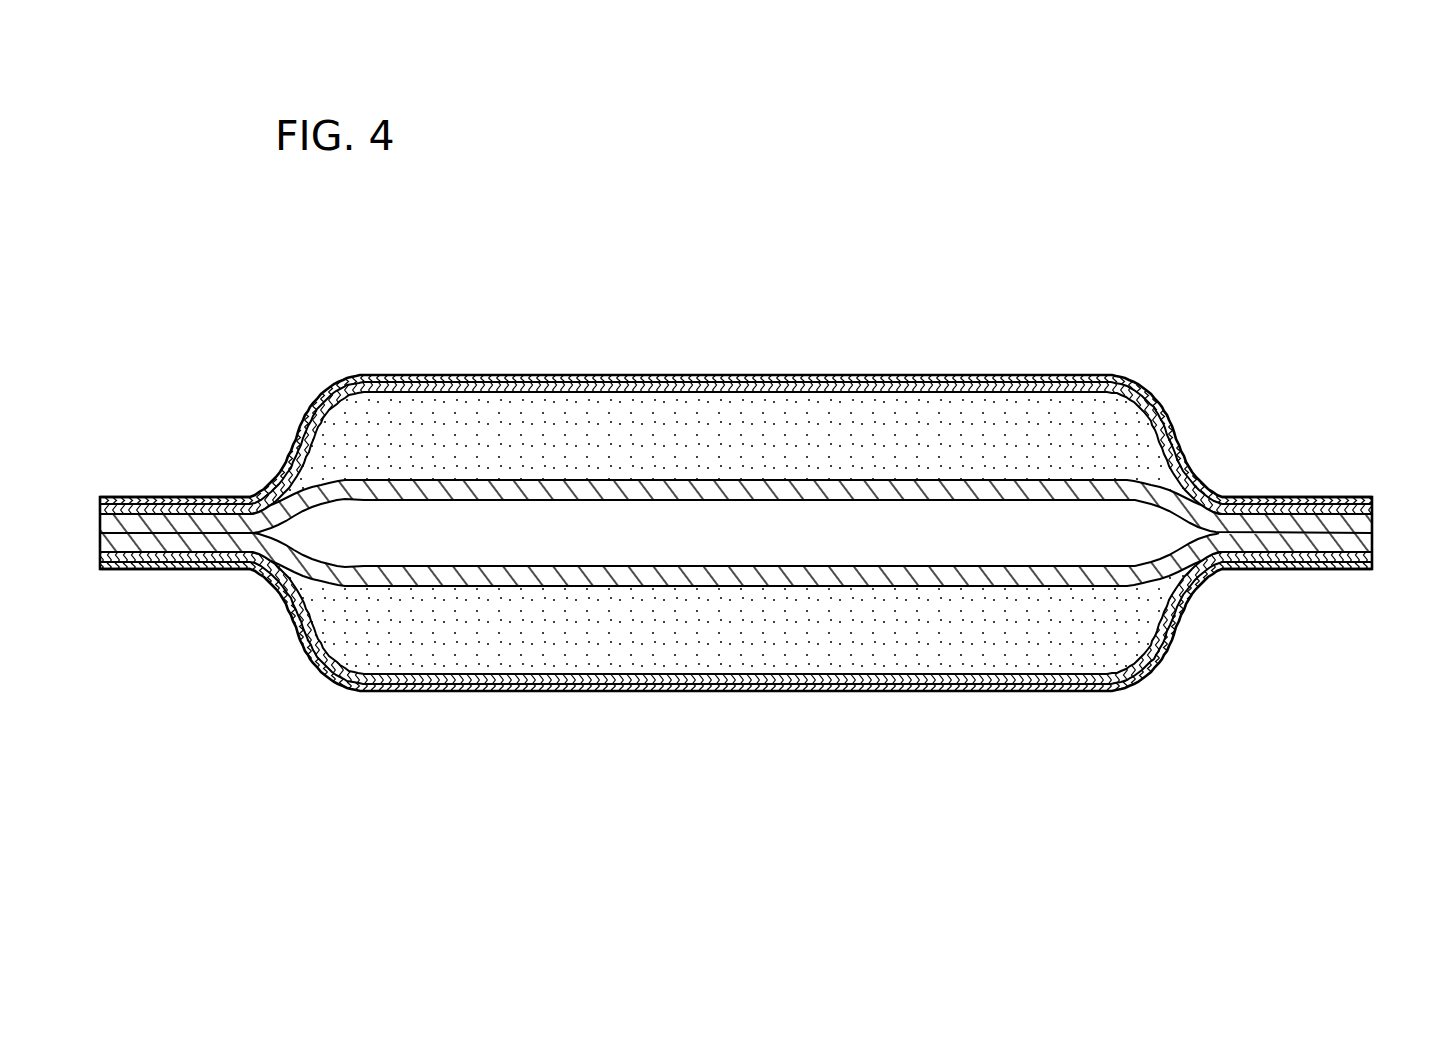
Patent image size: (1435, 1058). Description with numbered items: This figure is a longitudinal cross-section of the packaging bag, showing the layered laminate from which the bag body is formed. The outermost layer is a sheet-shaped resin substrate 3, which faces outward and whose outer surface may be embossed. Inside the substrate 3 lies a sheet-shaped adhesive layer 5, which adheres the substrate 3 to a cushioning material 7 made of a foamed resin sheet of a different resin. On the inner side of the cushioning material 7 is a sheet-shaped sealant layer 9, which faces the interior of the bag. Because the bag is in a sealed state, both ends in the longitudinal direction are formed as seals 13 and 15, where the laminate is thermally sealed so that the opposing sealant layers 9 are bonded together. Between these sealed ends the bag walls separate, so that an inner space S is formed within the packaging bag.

The substrate 3 is at (1375, 500).
The adhesive layer 5 is at (1375, 508).
The cushioning material 7 is at (724, 404).
The sealant layer 9 is at (1375, 523).
The seal 13 is at (169, 483).
The seal 15 is at (1303, 483).
The inner space S is at (713, 542).